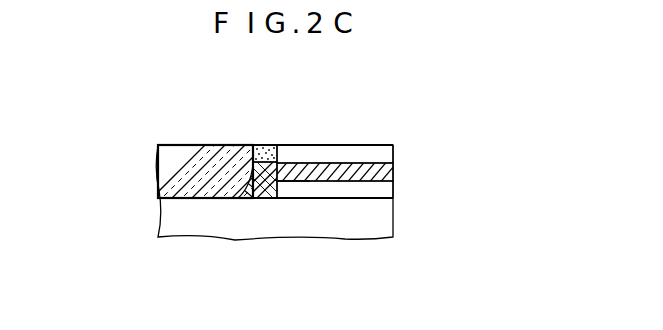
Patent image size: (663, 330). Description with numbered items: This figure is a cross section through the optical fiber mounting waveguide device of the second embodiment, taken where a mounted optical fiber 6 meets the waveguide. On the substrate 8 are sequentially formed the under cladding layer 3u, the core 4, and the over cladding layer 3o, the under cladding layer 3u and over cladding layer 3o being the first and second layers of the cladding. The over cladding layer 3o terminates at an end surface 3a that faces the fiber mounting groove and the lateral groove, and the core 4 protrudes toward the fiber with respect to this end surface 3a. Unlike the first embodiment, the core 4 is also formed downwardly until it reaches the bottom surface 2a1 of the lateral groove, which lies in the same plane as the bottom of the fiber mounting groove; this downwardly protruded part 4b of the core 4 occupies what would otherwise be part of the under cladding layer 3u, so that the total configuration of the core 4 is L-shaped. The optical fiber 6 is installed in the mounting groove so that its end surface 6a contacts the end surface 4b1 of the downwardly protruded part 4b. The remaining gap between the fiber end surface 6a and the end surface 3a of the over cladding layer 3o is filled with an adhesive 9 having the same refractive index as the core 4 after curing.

The substrate 8 is at (377, 217).
The bottom surface of the lateral groove 2a1 is at (186, 198).
The optical fiber 6 is at (204, 150).
The end surface of the optical fiber 6a is at (238, 198).
The adhesive 9 is at (260, 145).
The downwardly protruded part of the core 4b is at (268, 198).
The end surface of the downwardly protruded part 4b1 is at (290, 183).
The core 4 is at (393, 170).
The over cladding layer 3o is at (353, 145).
The end surface of the over cladding layer 3a is at (295, 145).
The under cladding layer 3u is at (323, 190).